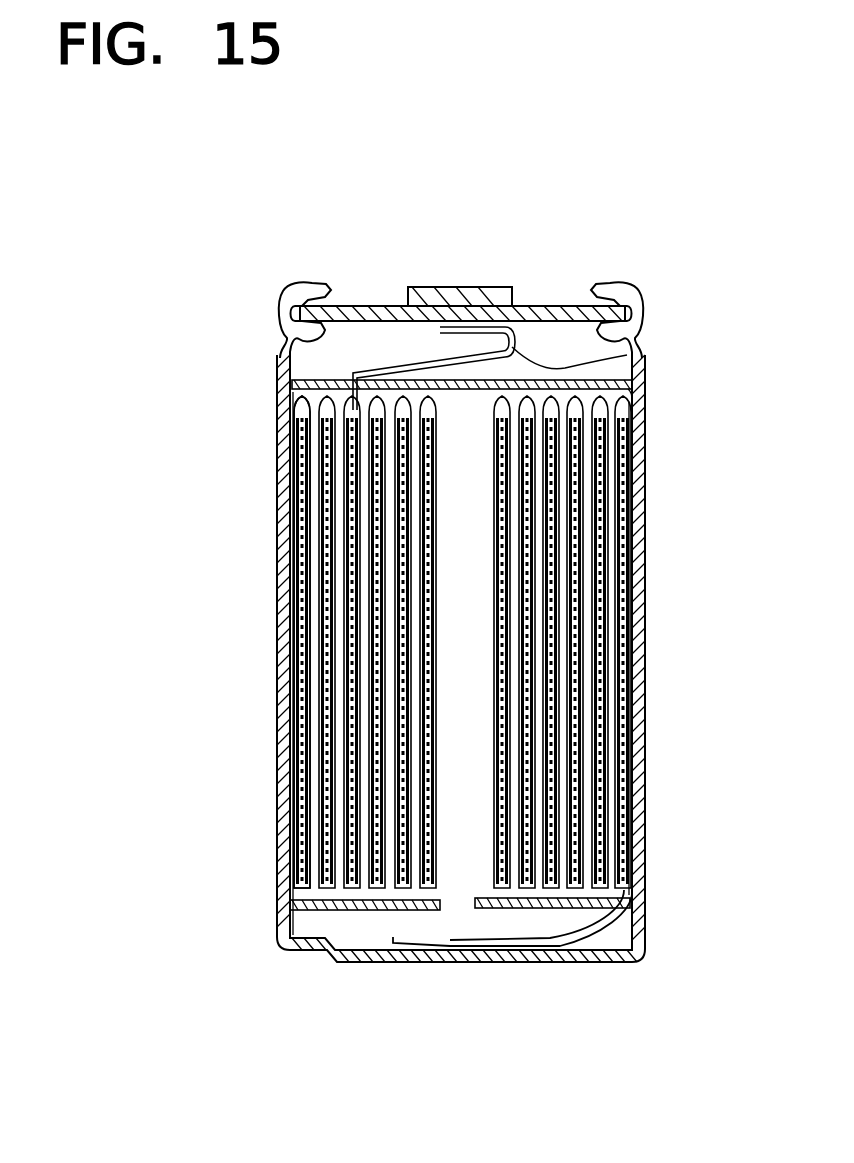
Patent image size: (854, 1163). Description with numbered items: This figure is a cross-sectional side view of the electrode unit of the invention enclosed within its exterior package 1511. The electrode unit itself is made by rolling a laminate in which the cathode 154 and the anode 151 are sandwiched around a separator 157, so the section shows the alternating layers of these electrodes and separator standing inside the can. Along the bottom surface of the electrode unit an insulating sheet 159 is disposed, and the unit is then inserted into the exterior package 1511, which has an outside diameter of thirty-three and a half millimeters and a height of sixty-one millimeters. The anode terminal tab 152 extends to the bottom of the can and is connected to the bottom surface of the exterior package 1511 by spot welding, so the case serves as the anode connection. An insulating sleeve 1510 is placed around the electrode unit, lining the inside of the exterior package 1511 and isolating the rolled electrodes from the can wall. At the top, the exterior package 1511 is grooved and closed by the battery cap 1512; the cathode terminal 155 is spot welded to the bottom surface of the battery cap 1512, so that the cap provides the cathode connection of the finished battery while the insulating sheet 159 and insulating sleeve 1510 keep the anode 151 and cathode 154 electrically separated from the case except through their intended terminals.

The anode 151 is at (290, 505).
The anode terminal tab 152 is at (580, 950).
The cathode 154 is at (303, 440).
The cathode terminal 155 is at (644, 352).
The separator 157 is at (300, 410).
The insulating sheet 159 is at (630, 912).
The insulating sleeve 1510 is at (647, 396).
The exterior package 1511 is at (643, 630).
The battery cap 1512 is at (372, 304).